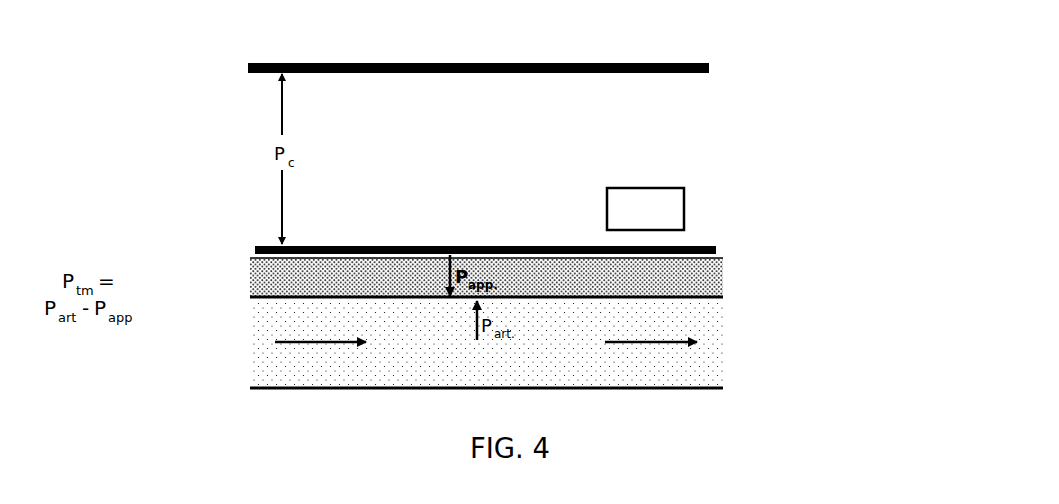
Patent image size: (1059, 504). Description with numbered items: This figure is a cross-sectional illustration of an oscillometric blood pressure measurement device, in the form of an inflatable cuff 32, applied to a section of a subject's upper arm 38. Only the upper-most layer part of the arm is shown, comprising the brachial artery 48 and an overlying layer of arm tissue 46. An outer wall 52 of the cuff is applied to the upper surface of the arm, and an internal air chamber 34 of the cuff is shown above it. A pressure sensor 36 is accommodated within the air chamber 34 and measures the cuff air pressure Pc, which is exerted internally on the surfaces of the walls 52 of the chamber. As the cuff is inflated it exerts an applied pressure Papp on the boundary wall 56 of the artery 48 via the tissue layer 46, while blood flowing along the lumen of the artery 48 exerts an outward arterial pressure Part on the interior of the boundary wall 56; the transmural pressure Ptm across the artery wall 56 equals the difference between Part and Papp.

The inflatable cuff 32 is at (683, 51).
The internal air chamber 34 is at (686, 120).
The pressure sensor 36 is at (672, 206).
The upper arm 38 is at (740, 273).
The arm tissue 46 is at (252, 272).
The brachial artery 48 is at (254, 325).
The outer wall 52 is at (257, 247).
The boundary wall 56 is at (710, 299).